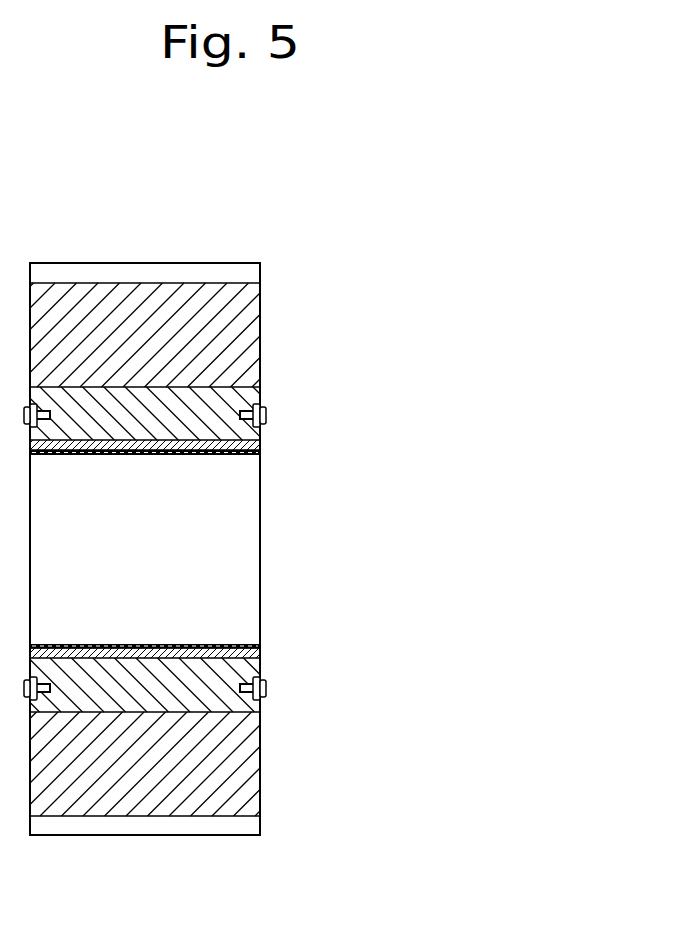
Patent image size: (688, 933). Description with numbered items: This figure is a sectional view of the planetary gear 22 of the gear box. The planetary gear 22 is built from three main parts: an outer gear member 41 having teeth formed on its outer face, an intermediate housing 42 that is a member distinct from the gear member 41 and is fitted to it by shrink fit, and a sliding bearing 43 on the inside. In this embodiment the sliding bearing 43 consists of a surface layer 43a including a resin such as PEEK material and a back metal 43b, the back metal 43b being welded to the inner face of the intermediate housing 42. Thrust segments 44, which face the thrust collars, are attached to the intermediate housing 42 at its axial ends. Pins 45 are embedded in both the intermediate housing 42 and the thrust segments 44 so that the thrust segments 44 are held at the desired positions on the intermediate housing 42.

The planetary gear 22 is at (291, 250).
The gear member 41 is at (250, 797).
The intermediate housing 42 is at (250, 705).
The sliding bearing 43 is at (280, 549).
The surface layer 43a is at (236, 643).
The back metal 43b is at (253, 657).
The thrust segments 44 is at (266, 416).
The pins 45 is at (250, 397).